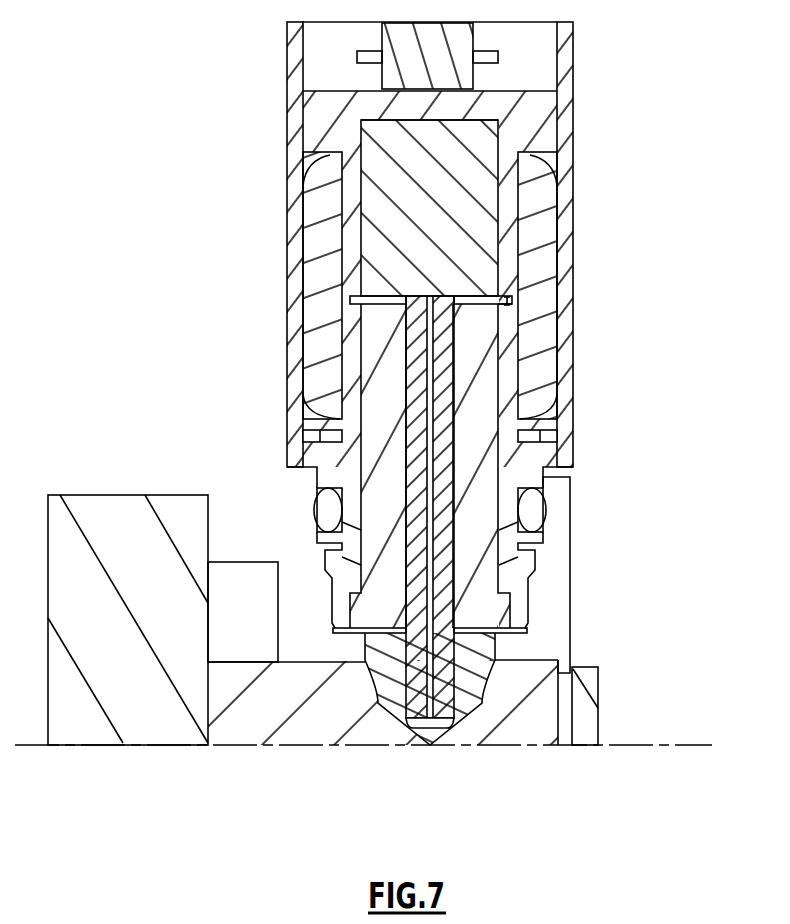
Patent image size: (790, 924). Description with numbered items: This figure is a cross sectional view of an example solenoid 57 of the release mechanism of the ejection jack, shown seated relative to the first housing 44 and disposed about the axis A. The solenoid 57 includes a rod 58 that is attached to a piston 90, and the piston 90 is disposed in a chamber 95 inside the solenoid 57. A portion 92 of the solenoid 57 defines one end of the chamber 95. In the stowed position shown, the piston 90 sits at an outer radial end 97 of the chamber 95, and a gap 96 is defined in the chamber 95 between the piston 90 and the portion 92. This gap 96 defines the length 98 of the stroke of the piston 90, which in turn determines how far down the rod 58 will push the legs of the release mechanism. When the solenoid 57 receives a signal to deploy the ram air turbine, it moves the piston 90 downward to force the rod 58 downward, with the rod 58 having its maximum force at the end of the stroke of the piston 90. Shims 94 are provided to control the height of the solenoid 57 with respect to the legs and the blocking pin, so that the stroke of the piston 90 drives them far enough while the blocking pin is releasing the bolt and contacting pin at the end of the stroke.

The solenoid 57 is at (281, 67).
The outer radial end 97 is at (373, 109).
The piston 90 is at (460, 212).
The chamber 95 is at (376, 301).
The gap 96 is at (523, 300).
The length 98 is at (515, 305).
The portion 92 is at (478, 372).
The rod 58 is at (455, 469).
The shims 94 is at (525, 630).
The first housing 44 is at (142, 512).
The axis A is at (166, 748).